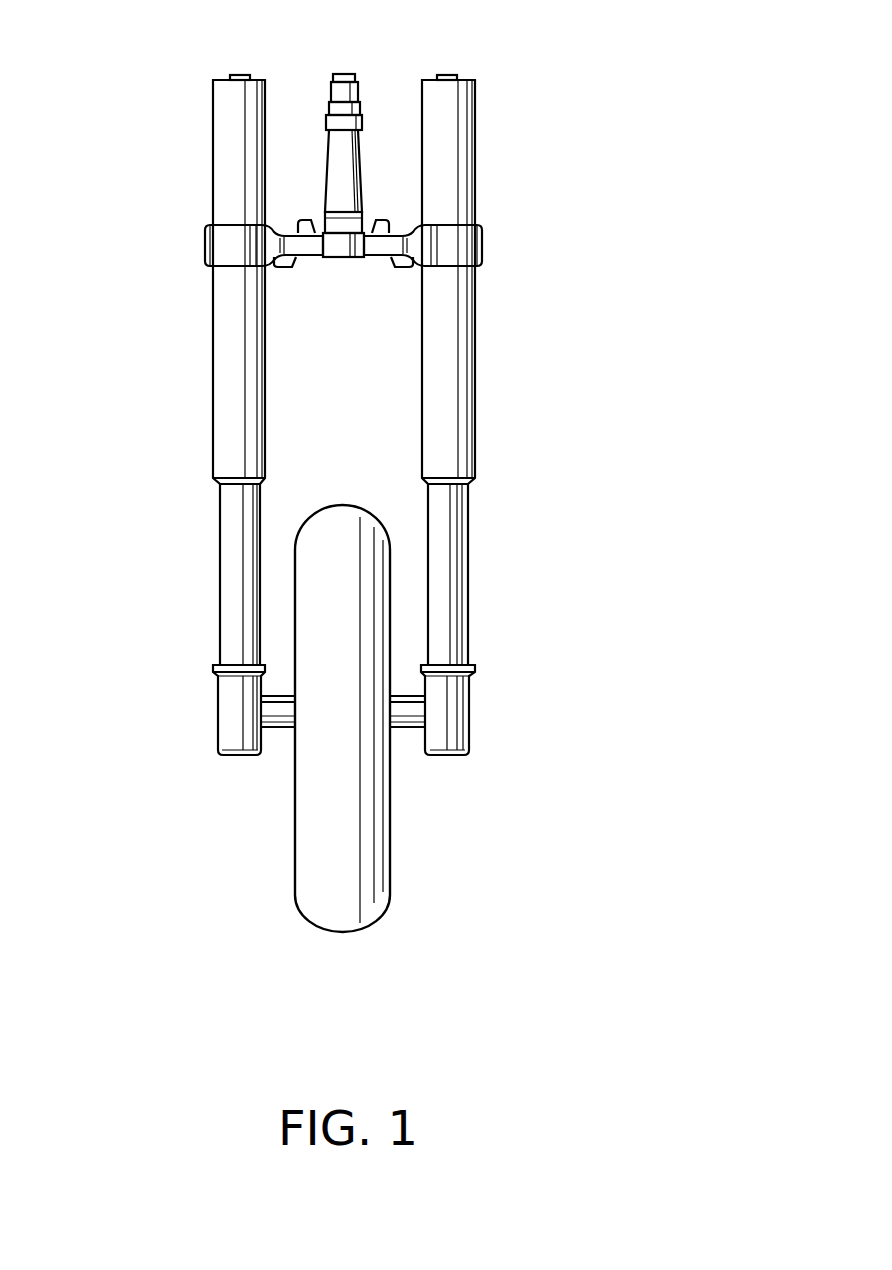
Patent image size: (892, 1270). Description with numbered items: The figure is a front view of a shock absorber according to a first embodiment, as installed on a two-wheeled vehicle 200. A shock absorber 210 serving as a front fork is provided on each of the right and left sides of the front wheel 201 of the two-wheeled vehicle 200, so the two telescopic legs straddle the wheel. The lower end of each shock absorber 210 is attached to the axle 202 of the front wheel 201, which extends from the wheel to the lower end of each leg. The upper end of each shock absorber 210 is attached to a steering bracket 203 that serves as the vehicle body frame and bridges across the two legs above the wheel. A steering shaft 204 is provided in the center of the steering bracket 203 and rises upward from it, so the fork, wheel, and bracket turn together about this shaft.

The two-wheeled vehicle 200 is at (544, 54).
The front wheel 201 is at (368, 860).
The axle 202 is at (407, 712).
The steering bracket 203 is at (463, 247).
The steering shaft 204 is at (352, 160).
The shock absorber 210 is at (213, 122).